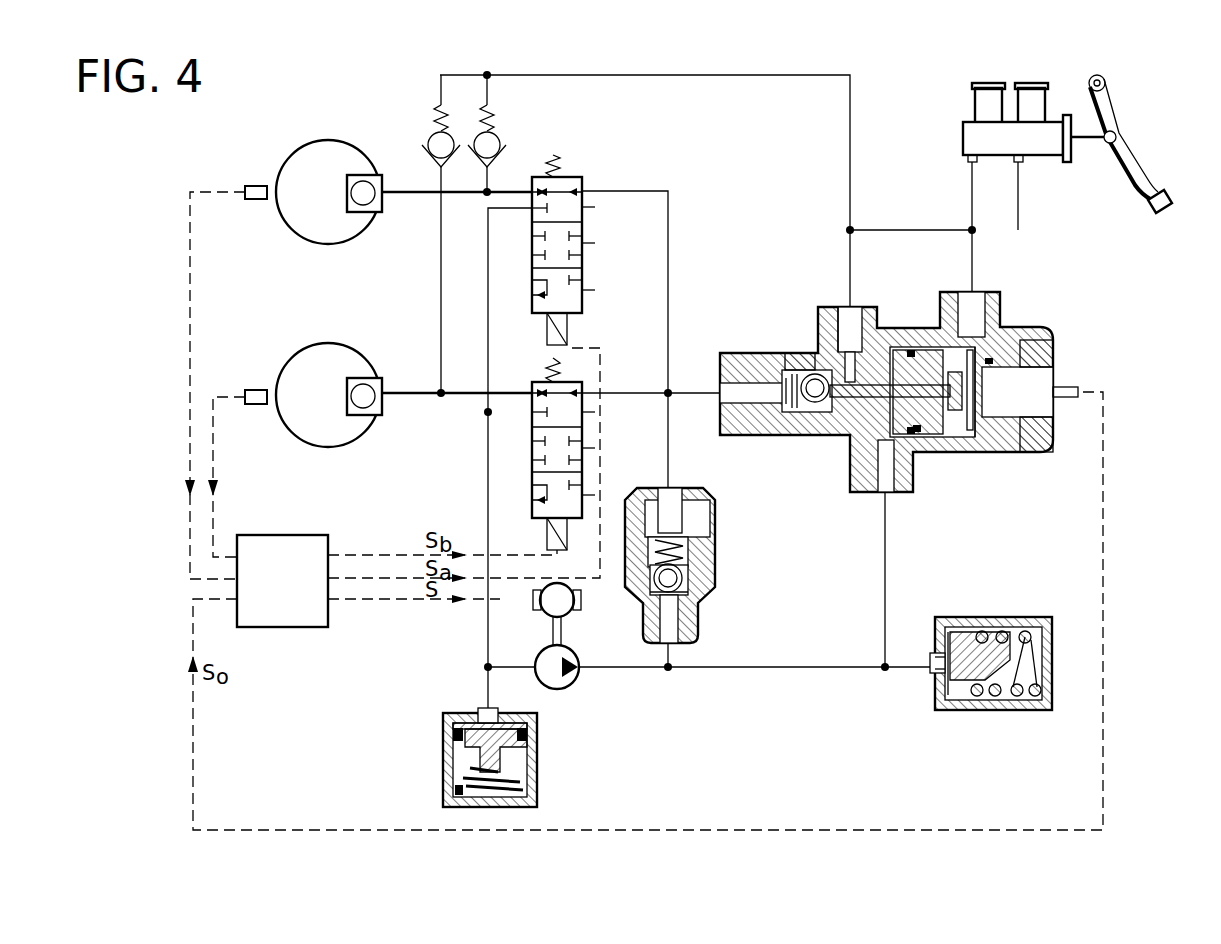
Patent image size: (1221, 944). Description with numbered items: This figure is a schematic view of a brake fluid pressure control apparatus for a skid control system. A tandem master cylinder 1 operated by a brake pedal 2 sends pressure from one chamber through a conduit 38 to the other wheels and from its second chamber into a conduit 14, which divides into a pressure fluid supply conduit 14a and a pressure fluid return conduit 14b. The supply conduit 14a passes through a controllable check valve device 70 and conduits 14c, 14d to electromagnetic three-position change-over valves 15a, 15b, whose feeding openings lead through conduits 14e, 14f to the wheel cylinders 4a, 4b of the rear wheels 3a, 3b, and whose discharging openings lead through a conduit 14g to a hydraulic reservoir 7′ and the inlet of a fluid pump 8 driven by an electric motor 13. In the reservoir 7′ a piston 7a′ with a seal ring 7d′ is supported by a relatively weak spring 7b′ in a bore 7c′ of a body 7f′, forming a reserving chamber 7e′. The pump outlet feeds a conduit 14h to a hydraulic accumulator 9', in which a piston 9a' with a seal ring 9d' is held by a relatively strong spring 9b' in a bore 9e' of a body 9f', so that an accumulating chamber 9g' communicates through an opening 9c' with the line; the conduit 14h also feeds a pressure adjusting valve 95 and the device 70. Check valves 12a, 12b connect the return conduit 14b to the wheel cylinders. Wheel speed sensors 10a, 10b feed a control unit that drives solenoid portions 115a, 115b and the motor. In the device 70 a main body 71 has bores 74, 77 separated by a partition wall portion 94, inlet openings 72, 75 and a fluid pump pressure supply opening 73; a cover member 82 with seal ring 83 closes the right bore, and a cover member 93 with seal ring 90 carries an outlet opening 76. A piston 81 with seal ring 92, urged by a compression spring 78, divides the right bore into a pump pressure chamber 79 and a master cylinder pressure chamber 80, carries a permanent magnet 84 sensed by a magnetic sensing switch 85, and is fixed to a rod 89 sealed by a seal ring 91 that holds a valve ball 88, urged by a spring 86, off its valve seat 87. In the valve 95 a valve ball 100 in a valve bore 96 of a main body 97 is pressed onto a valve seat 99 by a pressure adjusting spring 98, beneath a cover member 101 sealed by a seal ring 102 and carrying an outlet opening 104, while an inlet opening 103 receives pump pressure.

The tandem master cylinder 1 is at (1002, 73).
The brake pedal 2 is at (1116, 118).
The rear wheel 3a is at (328, 150).
The rear wheel 3b is at (328, 353).
The wheel cylinder 4a is at (362, 175).
The wheel cylinder 4b is at (362, 378).
The hydraulic reservoir 7′ is at (437, 763).
The piston 7a′ is at (453, 734).
The relatively weak spring 7b′ is at (535, 787).
The bore 7c′ is at (533, 750).
The seal ring 7d′ is at (527, 726).
The reserving chamber 7e′ is at (474, 716).
The body 7f′ is at (535, 773).
The fluid pump 8 is at (538, 647).
The hydraulic accumulator 9' is at (991, 643).
The piston 9a' is at (1029, 656).
The relatively strong spring 9b' is at (1042, 628).
The opening 9c' is at (921, 674).
The seal ring 9d' is at (963, 715).
The bore 9e' is at (993, 715).
The body 9f' is at (1026, 692).
The accumulating chamber 9g' is at (922, 674).
The wheel speed sensor 10a is at (256, 186).
The wheel speed sensor 10b is at (256, 390).
The check valve 12a is at (484, 120).
The check valve 12b is at (437, 120).
The electric motor 13 is at (533, 589).
The conduit 14 is at (970, 204).
The pressure fluid supply conduit 14a is at (700, 400).
The pressure fluid return conduit 14b is at (852, 153).
The conduit 14c is at (670, 217).
The conduit 14d is at (630, 391).
The conduit 14e is at (479, 194).
The conduit 14f is at (463, 382).
The conduit 14g is at (487, 298).
The conduit 14h is at (816, 670).
The electromagnetic three-position change-over valve 15a is at (573, 176).
The electromagnetic three-position change-over valve 15b is at (572, 382).
The conduit 38 is at (1020, 217).
The controllable check valve device 70 is at (783, 296).
The main body 71 is at (926, 330).
The inlet opening 72 is at (979, 284).
The fluid pump pressure supply opening 73 is at (876, 496).
The bore 74 is at (952, 340).
The inlet opening 75 is at (840, 304).
The outlet opening 76 is at (730, 372).
The bore 77 is at (775, 352).
The compression spring 78 is at (1007, 455).
The pump pressure chamber 79 is at (890, 317).
The master cylinder pressure chamber 80 is at (995, 300).
The piston 81 is at (943, 455).
The cover member 82 is at (1042, 335).
The seal ring 83 is at (1040, 290).
The permanent magnet 84 is at (1037, 455).
The magnetic sensing switch 85 is at (1037, 392).
The spring 86 is at (786, 406).
The valve seat 87 is at (822, 404).
The valve ball 88 is at (797, 410).
The rod 89 is at (973, 455).
The seal ring 90 is at (742, 352).
The seal ring 91 is at (876, 304).
The seal ring 92 is at (920, 433).
The cover member 93 is at (760, 378).
The partition wall portion 94 is at (852, 447).
The pressure adjusting valve 95 is at (723, 573).
The valve bore 96 is at (653, 571).
The main body 97 is at (710, 535).
The pressure adjusting spring 98 is at (683, 552).
The valve seat 99 is at (690, 590).
The valve ball 100 is at (653, 602).
The cover member 101 is at (642, 492).
The seal ring 102 is at (712, 508).
The inlet opening 103 is at (682, 648).
The outlet opening 104 is at (678, 489).
The solenoid portion 115a is at (547, 321).
The solenoid portion 115b is at (547, 527).